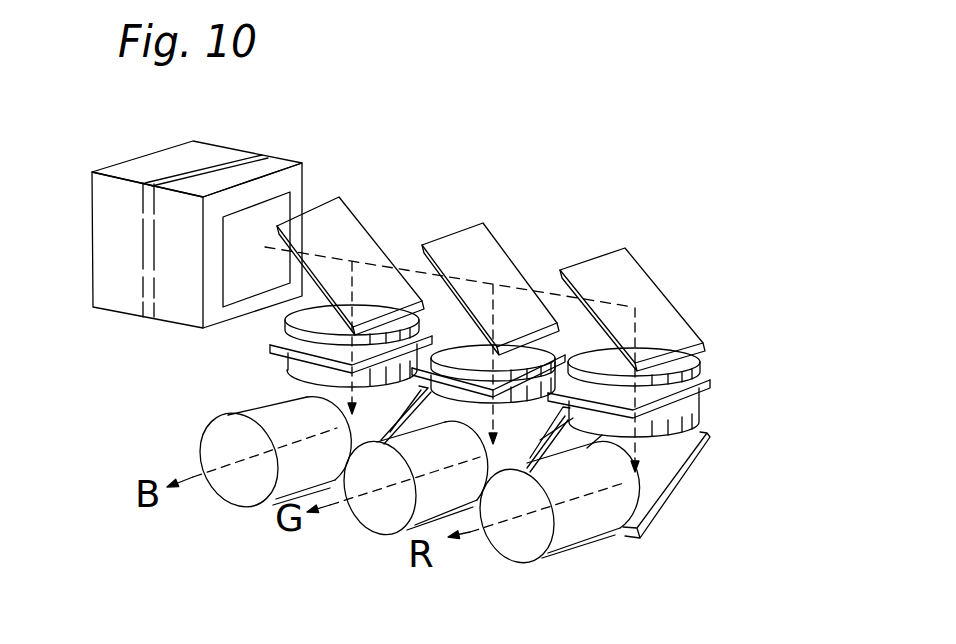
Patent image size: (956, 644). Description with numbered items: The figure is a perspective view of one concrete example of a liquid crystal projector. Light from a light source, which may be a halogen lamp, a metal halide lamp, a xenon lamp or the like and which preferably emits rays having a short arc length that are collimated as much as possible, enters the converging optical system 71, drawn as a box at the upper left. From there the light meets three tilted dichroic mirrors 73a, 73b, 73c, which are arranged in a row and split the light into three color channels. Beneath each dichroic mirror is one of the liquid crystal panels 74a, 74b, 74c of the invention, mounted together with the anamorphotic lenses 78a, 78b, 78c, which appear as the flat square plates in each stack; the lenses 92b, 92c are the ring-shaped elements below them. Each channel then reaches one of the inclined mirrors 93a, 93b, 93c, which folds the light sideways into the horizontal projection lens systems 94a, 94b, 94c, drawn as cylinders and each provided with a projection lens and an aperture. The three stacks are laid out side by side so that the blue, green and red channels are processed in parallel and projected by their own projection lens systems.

The converging optical system 71 is at (123, 302).
The dichroic mirror 73a is at (338, 203).
The dichroic mirror 73b is at (492, 252).
The dichroic mirror 73c is at (650, 292).
The liquid crystal panel 74a is at (284, 348).
The liquid crystal panel 74b is at (433, 310).
The liquid crystal panel 74c is at (700, 390).
The anamorphotic lens 78a is at (287, 327).
The anamorphotic lens 78b is at (449, 307).
The anamorphotic lens 78c is at (698, 375).
The lens 92b is at (531, 345).
The lens 92c is at (677, 442).
The mirror 93a is at (268, 395).
The mirror 93b is at (530, 427).
The mirror 93c is at (670, 498).
The projection lens system 94a is at (243, 493).
The projection lens system 94b is at (380, 522).
The projection lens system 94c is at (523, 547).